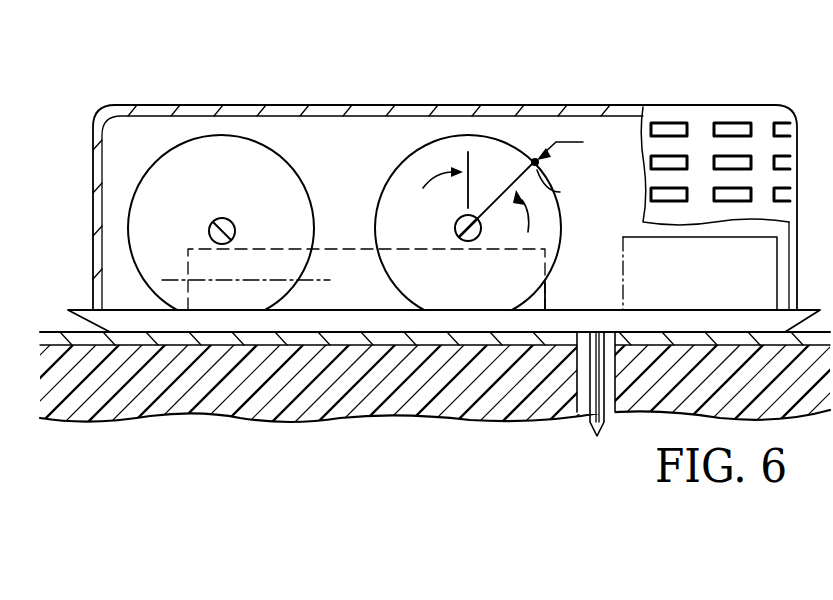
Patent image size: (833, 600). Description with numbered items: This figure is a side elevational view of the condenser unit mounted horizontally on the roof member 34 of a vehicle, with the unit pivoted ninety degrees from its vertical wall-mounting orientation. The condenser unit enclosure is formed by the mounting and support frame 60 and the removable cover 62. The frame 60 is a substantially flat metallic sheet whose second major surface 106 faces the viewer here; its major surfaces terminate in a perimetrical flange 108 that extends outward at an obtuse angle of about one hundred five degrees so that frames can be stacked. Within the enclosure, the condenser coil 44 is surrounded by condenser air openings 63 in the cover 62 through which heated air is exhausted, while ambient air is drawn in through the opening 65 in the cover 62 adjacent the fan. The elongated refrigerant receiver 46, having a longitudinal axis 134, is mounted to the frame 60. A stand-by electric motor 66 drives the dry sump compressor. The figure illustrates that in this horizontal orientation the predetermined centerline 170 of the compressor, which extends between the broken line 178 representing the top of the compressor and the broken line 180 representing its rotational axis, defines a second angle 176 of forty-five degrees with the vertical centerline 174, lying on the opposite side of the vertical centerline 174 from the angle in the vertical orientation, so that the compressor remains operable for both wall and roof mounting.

The roof member 34 is at (470, 420).
The condenser coil 44 is at (620, 257).
The refrigerant receiver 46 is at (330, 248).
The mounting and support frame 60 is at (82, 313).
The removable cover 62 is at (768, 115).
The condenser air openings 63 is at (733, 120).
The opening 65 is at (318, 94).
The electric motor 66 is at (154, 168).
The second major surface 106 is at (415, 352).
The perimetrical flange 108 is at (614, 320).
The longitudinal axis 134 is at (177, 278).
The predetermined centerline 170 is at (500, 204).
The vertical centerline 174 is at (465, 194).
The second angle 176 is at (492, 170).
The broken line representing top of compressor 178 is at (560, 192).
The rotational axis 180 is at (462, 241).